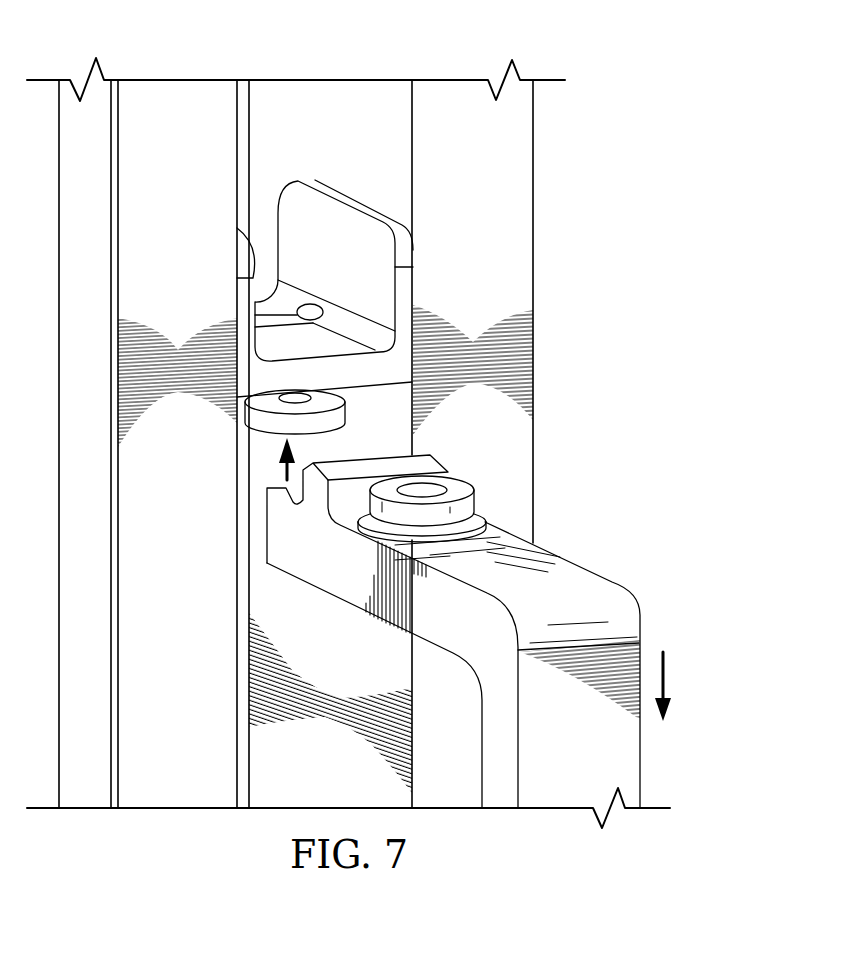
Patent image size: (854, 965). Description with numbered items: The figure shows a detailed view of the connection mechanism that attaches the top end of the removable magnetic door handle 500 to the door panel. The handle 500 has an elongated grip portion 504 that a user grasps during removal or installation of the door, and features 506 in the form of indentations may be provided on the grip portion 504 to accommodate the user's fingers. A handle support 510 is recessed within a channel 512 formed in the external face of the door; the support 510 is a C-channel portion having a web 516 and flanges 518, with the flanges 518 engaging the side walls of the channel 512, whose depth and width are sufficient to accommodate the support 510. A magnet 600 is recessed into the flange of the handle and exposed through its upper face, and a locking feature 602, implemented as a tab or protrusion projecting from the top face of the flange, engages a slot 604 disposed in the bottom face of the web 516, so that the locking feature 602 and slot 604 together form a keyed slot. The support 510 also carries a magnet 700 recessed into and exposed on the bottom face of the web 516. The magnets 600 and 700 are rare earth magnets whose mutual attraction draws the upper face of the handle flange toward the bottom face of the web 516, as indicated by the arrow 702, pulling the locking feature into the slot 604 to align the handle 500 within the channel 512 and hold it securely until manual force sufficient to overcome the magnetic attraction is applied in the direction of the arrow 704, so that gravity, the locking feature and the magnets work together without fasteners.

The removable magnetic door handle 500 is at (643, 598).
The grip portion 504 is at (623, 764).
The features 506 is at (580, 578).
The handle supports 510 is at (304, 166).
The channel 512 is at (375, 100).
The web 516 is at (353, 228).
The flanges 518 is at (330, 345).
The magnets 600 is at (480, 500).
The locking features 602 is at (435, 454).
The slots 604 is at (300, 305).
The magnets 700 is at (262, 429).
The arrows 702 is at (285, 480).
The arrow 704 is at (668, 678).